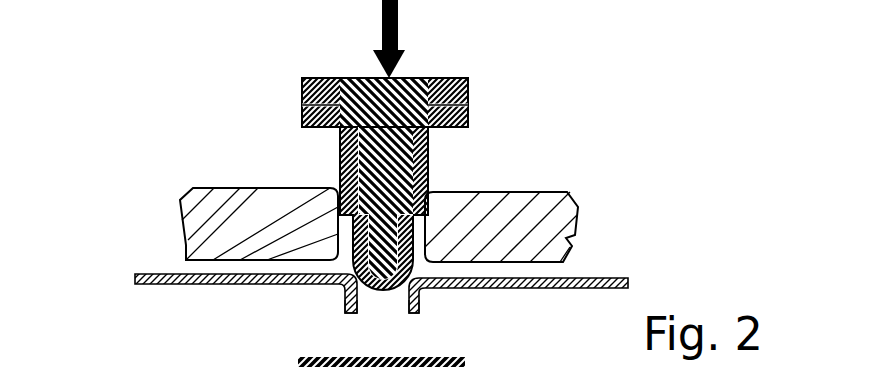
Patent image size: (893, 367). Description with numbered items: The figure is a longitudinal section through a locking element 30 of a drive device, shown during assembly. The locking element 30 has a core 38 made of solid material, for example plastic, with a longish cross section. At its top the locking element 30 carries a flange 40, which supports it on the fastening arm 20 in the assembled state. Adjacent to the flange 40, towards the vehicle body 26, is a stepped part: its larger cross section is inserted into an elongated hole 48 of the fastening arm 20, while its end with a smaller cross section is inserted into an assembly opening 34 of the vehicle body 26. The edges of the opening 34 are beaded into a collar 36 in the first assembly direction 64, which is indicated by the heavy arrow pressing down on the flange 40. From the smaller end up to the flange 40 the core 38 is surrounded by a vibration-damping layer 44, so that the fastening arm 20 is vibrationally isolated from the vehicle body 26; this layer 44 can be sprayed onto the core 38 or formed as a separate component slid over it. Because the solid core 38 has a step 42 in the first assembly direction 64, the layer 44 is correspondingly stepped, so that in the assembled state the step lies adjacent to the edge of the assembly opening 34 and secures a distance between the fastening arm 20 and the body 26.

The fastening arm 20 is at (562, 193).
The vehicle body 26 is at (597, 278).
The locking element 30 is at (285, 60).
The assembly opening 34 is at (375, 305).
The collar 36 is at (345, 293).
The core 38 is at (343, 148).
The flange 40 is at (466, 79).
The step 42 is at (427, 180).
The vibration-damping layer 44 is at (302, 105).
The elongated hole 48 is at (351, 233).
The first assembly direction 64 is at (398, 28).